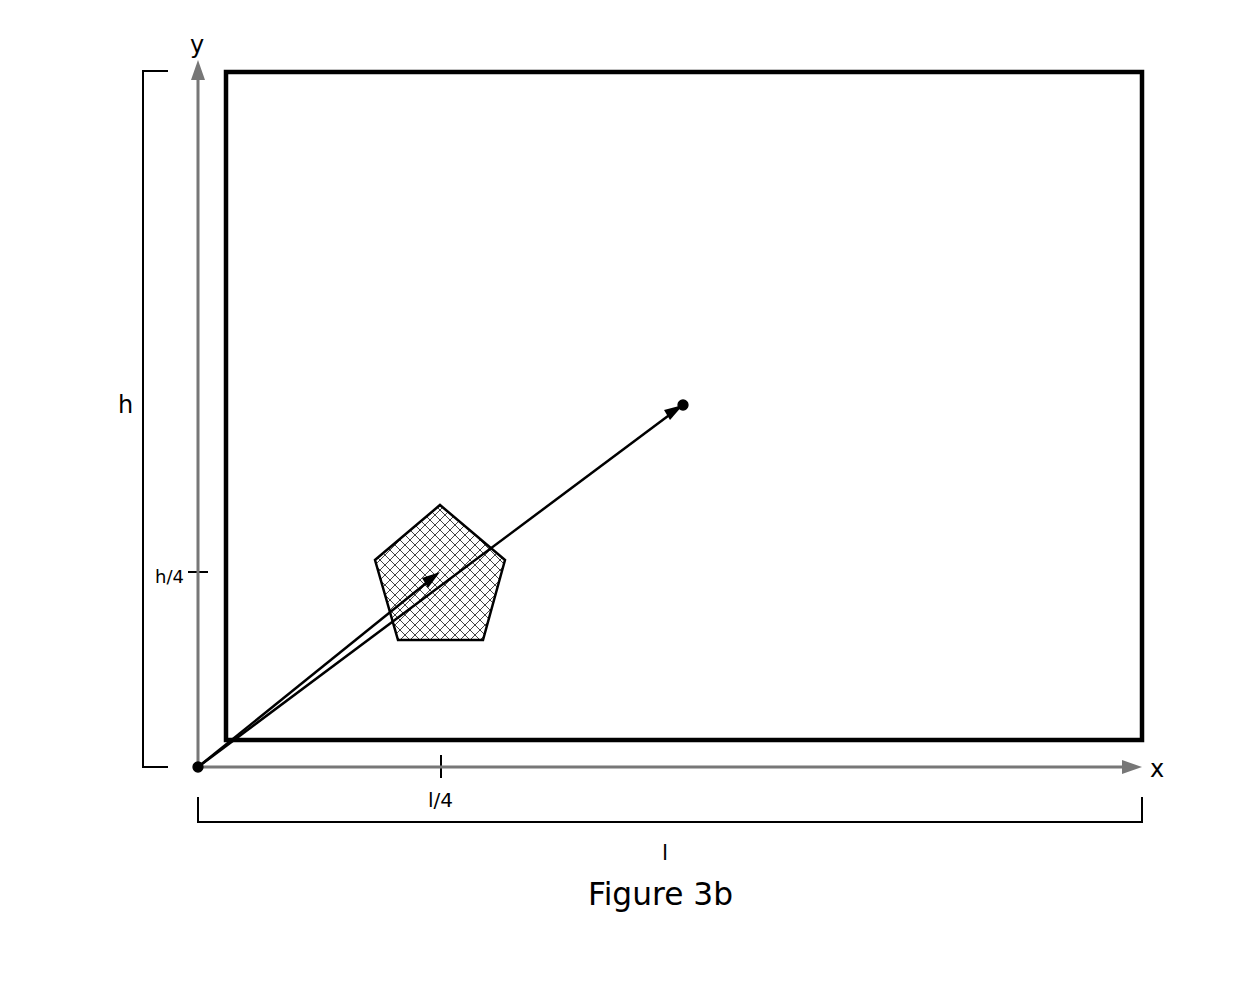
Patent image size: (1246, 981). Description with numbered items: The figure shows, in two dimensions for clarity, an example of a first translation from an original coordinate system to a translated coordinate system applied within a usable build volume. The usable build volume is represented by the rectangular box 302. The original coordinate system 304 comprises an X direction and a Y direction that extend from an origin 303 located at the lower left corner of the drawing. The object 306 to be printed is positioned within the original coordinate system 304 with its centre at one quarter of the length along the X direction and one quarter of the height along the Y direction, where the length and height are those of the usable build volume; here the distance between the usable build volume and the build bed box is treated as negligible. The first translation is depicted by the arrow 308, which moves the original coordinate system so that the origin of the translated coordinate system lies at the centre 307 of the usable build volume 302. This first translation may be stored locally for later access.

The rectangular box 302 is at (1143, 460).
The origin 303 is at (192, 772).
The original coordinate system 304 is at (905, 770).
The object 306 is at (507, 595).
The centre 307 is at (690, 402).
The arrow 308 is at (598, 462).